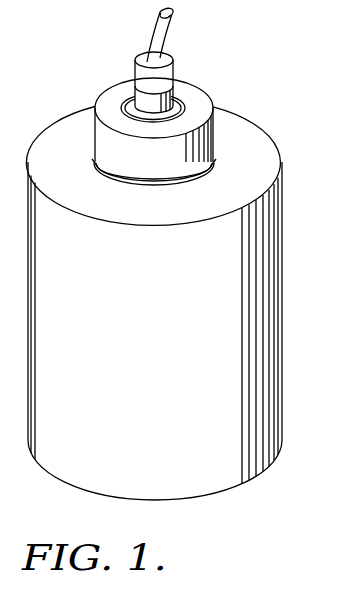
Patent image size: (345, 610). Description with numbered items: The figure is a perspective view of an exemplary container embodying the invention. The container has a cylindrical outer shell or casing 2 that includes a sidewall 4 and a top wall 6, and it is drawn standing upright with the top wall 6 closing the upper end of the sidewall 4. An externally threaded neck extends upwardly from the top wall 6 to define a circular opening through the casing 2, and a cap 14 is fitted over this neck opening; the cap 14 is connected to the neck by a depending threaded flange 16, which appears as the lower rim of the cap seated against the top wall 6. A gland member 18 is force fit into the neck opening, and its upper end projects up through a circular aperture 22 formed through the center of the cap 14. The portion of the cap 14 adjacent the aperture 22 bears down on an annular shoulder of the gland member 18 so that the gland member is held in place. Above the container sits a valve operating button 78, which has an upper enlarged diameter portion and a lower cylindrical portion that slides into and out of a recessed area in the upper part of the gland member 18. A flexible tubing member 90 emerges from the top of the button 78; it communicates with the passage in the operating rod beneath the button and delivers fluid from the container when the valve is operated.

The outer shell or casing 2 is at (246, 119).
The sidewall 4 is at (270, 310).
The top wall 6 is at (258, 146).
The cap 14 is at (200, 93).
The depending threaded flange 16 is at (100, 146).
The gland member 18 is at (133, 104).
The circular aperture 22 is at (123, 108).
The valve operating button 78 is at (176, 66).
The flexible tubing member 90 is at (155, 28).